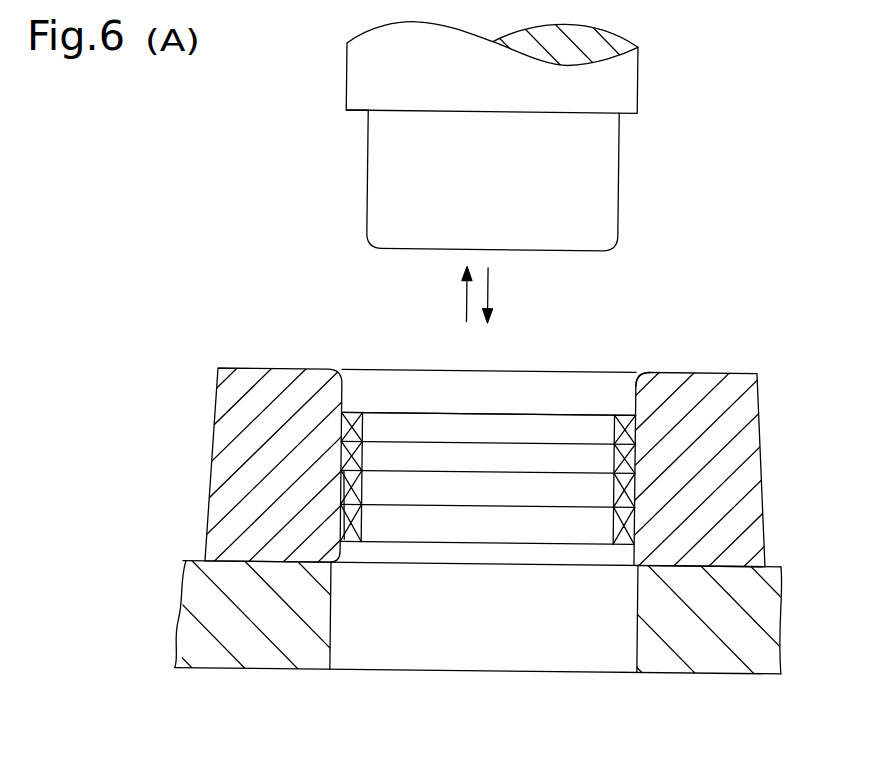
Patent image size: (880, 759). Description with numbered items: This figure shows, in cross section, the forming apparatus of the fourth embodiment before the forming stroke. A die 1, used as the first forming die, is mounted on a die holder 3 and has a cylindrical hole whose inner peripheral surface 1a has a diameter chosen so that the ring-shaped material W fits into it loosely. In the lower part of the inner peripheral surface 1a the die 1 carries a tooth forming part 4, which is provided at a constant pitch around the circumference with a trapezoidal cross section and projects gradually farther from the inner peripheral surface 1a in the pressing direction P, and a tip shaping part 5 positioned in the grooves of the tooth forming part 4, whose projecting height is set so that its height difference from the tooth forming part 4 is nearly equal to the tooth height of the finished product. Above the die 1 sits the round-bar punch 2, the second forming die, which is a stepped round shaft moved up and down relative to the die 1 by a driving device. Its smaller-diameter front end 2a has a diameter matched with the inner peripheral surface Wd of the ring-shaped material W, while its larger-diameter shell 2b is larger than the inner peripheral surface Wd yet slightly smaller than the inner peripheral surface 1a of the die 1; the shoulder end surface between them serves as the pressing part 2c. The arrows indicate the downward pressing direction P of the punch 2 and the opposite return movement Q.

The die 1 is at (441, 444).
The inner peripheral surface 1a is at (632, 380).
The punch 2 is at (491, 133).
The front end 2a is at (381, 211).
The shell 2b is at (360, 75).
The pressing part 2c is at (357, 111).
The die holder 3 is at (715, 653).
The tooth forming part 4 is at (348, 499).
The tip shaping part 5 is at (361, 540).
The ring-shaped material W is at (576, 436).
The inner peripheral surface of the ring-shaped material Wd is at (376, 411).
The upward (return) force Q is at (458, 297).
The pressing direction P is at (492, 285).